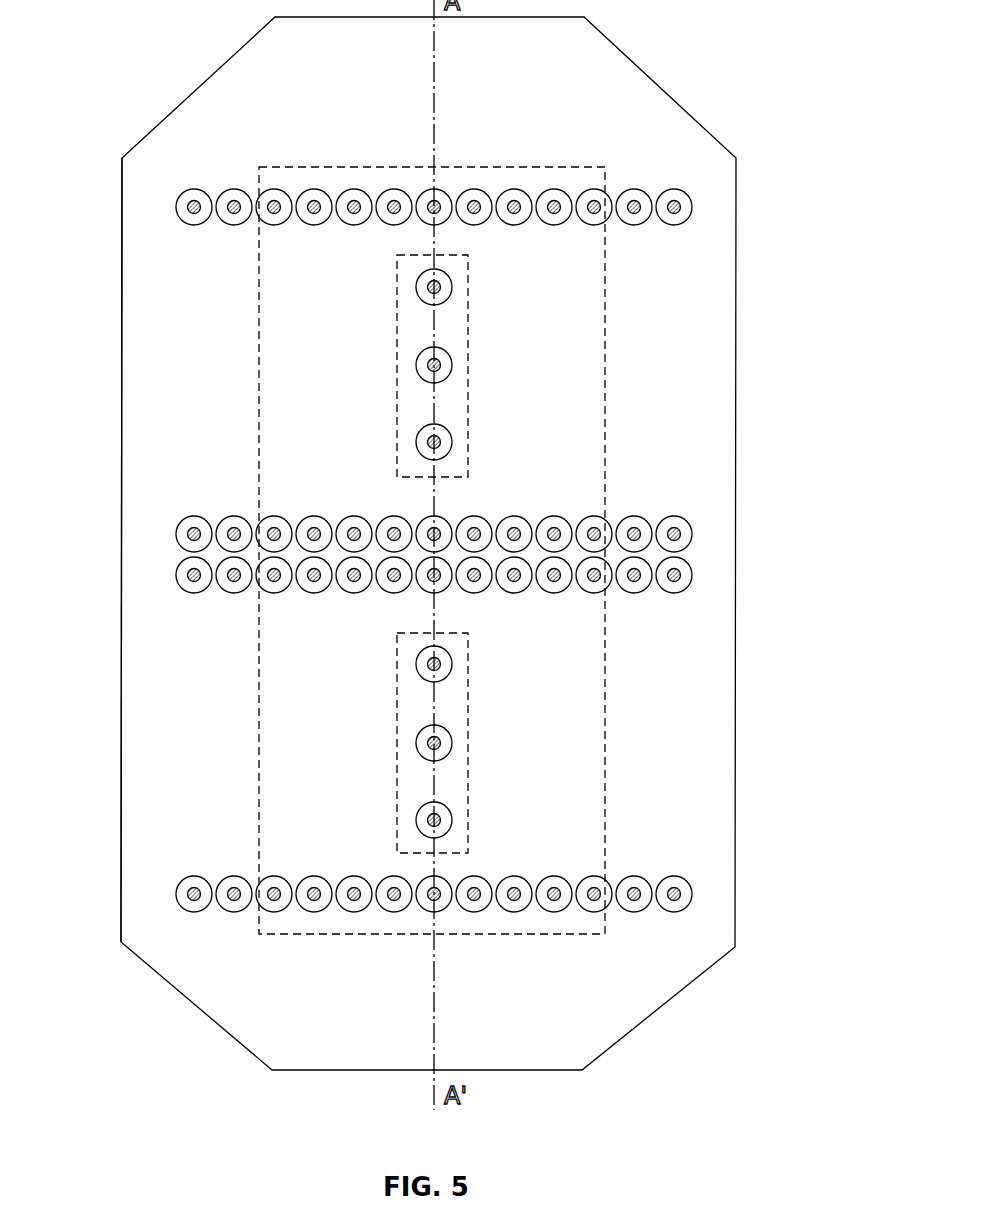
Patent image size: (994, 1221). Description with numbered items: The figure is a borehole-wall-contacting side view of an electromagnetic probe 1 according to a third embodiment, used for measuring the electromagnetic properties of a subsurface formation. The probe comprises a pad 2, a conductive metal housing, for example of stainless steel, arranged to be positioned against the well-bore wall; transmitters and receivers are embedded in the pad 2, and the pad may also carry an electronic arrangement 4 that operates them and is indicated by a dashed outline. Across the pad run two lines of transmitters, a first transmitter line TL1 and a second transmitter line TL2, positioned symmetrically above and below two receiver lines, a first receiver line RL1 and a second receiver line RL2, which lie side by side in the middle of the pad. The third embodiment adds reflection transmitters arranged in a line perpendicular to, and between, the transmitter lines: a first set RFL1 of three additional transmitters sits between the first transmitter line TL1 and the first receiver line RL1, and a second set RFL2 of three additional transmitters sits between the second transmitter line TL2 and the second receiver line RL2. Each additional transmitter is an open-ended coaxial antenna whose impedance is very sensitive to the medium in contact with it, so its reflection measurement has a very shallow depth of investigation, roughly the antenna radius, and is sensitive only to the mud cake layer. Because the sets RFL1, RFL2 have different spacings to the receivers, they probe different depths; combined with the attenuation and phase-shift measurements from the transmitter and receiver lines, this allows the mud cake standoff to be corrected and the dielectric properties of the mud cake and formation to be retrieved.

The electromagnetic probe 1 is at (137, 42).
The pad 2 is at (121, 942).
The electronic arrangement 4 is at (253, 797).
The first transmitter line TL1 is at (706, 201).
The second transmitter line TL2 is at (695, 893).
The first receiver line RL1 is at (703, 538).
The second receiver line RL2 is at (703, 578).
The first set of additional transmitters RFL1 is at (470, 363).
The second set of additional transmitters RFL2 is at (470, 741).